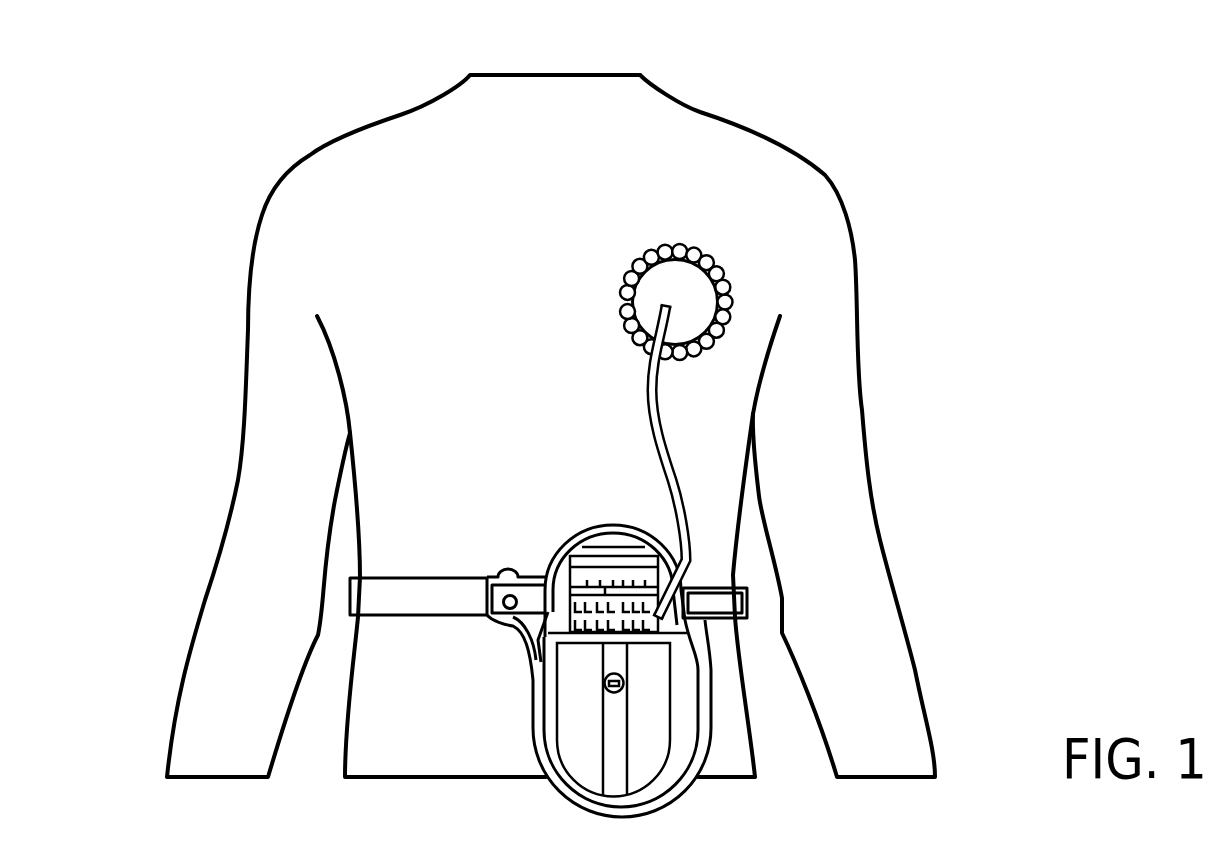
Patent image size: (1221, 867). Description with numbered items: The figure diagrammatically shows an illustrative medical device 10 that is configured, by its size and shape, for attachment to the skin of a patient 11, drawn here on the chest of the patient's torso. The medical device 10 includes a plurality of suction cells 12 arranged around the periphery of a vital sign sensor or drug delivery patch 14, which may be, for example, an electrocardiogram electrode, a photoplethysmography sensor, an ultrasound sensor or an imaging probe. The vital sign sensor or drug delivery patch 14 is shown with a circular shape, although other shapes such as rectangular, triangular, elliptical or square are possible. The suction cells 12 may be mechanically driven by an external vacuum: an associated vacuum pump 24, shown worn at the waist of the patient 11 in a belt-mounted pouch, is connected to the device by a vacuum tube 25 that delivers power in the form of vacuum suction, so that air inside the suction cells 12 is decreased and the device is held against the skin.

The medical device 10 is at (731, 244).
The patient 11 is at (352, 143).
The suction cells 12 is at (732, 278).
The vital sign sensor or drug delivery patch 14 is at (680, 293).
The vacuum pump 24 is at (672, 628).
The vacuum tube 25 is at (680, 462).